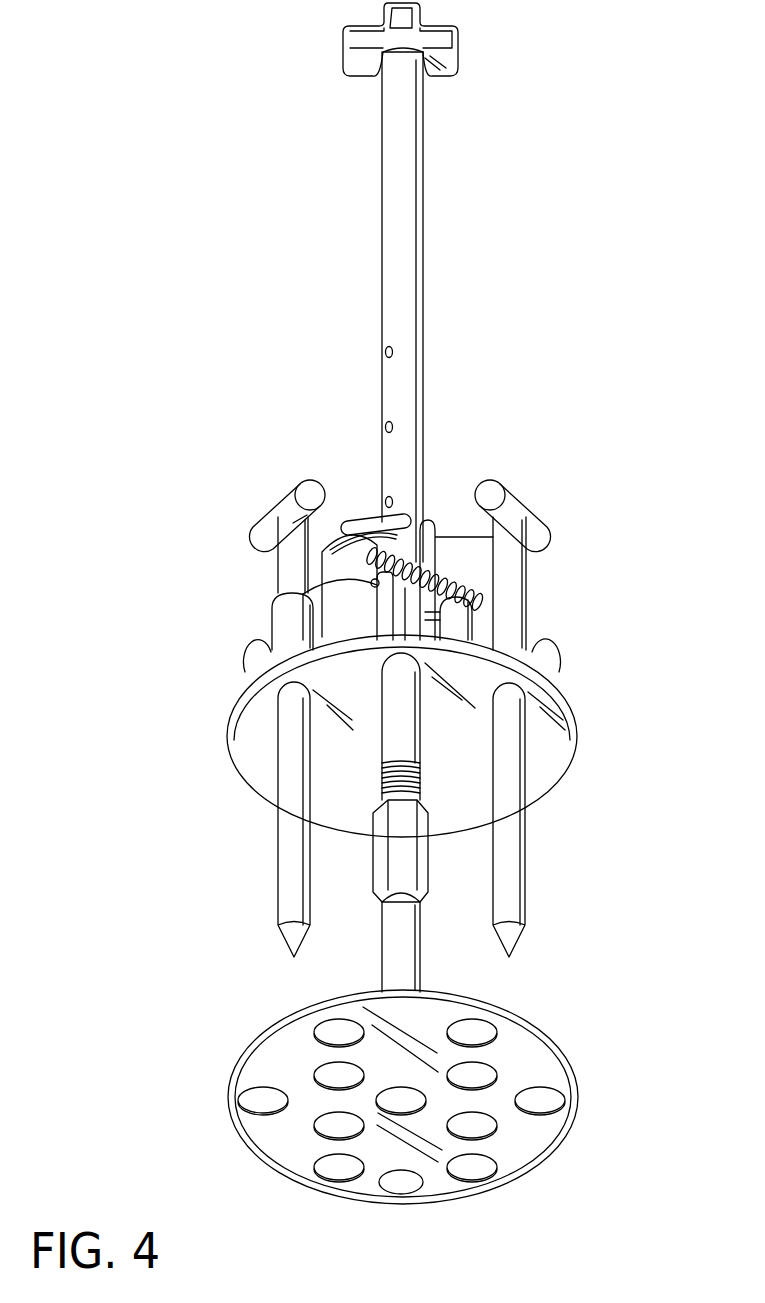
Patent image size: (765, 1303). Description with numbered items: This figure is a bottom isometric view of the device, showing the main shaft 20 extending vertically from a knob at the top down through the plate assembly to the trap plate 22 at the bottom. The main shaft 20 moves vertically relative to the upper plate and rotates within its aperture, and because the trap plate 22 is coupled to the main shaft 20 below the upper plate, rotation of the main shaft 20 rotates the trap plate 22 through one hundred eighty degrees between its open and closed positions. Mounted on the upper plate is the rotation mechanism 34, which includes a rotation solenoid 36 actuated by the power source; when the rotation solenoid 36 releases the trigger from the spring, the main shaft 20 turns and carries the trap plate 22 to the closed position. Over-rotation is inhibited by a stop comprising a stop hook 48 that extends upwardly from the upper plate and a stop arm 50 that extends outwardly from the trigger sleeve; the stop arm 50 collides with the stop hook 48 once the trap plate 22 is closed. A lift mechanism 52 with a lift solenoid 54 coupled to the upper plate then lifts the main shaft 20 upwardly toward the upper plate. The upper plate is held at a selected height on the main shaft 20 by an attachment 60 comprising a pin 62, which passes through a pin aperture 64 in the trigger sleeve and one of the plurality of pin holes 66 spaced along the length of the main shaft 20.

The main shaft 20 is at (403, 202).
The trap plate 22 is at (523, 1140).
The rotation mechanism 34 is at (455, 522).
The rotation solenoid 36 is at (463, 615).
The stop hook 48 is at (398, 617).
The stop arm 50 is at (247, 609).
The lift mechanism 52 is at (343, 483).
The lift solenoid 54 is at (338, 563).
The attachment 60 is at (197, 671).
The pin 62 is at (312, 594).
The pin aperture 64 is at (376, 583).
The pin holes 66 is at (385, 427).